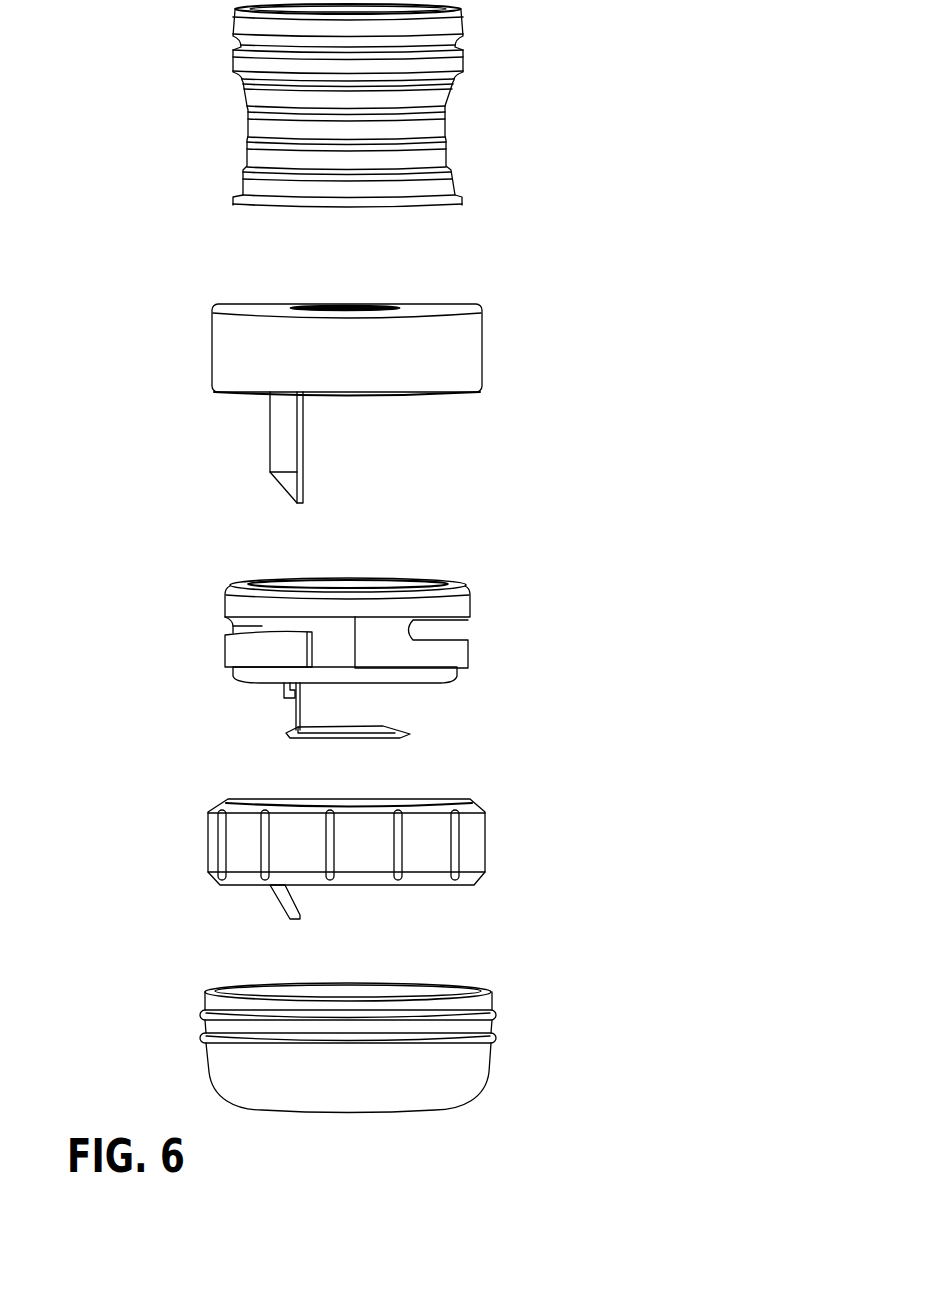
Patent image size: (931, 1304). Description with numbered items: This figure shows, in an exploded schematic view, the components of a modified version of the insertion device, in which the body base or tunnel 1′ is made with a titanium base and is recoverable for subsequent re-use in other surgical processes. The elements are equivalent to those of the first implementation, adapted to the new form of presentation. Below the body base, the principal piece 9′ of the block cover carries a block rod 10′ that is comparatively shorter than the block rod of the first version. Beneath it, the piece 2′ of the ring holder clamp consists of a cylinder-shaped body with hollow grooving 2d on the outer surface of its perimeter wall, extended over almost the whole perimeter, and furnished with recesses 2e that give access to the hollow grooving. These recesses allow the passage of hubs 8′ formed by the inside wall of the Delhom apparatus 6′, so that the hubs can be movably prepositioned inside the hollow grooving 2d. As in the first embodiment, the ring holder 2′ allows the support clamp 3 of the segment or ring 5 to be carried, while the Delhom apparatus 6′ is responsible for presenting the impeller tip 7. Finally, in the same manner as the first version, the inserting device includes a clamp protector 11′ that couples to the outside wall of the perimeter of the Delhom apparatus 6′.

The body base or tunnel 1′ is at (226, 124).
The principal piece of the block cover 9′ is at (440, 370).
The block rod 10′ is at (284, 445).
The ring holder clamp piece 2′ is at (351, 672).
The hollow grooving 2d is at (247, 628).
The recesses 2e is at (327, 648).
The support clamp 3 is at (320, 735).
The segment or ring 5 is at (382, 725).
The hubs 8′ is at (370, 802).
The Delhom apparatus 6′ is at (371, 847).
The impeller tip 7 is at (275, 905).
The clamp protector 11′ is at (463, 1067).